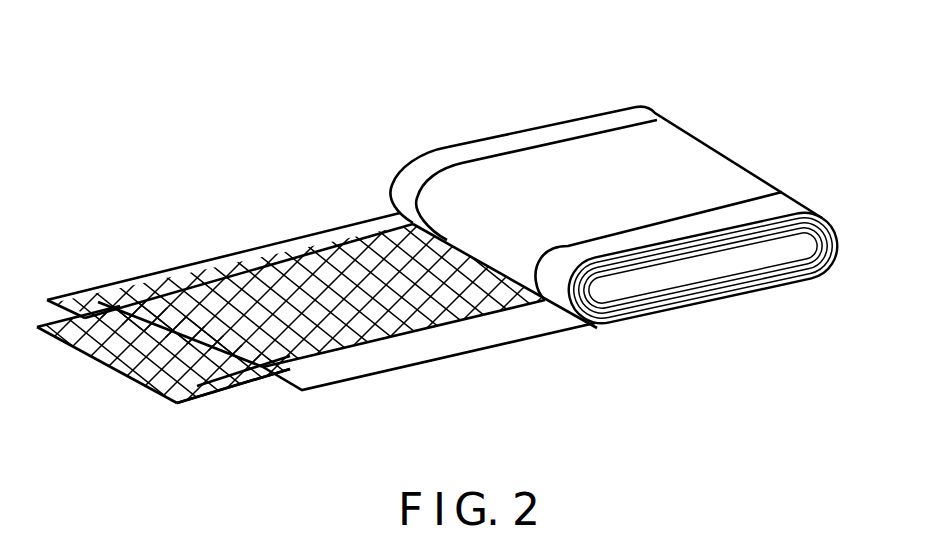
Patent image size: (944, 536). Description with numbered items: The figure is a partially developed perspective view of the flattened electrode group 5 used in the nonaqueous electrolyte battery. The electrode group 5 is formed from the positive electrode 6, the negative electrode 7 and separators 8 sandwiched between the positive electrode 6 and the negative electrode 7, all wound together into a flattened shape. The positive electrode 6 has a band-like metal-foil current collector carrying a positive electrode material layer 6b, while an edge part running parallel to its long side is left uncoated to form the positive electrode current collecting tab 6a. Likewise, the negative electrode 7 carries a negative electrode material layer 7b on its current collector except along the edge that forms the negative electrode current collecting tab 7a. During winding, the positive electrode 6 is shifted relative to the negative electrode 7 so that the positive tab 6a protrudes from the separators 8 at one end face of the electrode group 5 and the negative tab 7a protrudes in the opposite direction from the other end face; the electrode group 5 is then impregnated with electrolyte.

The electrode group 5 is at (498, 106).
The positive electrode 6 is at (152, 268).
The positive electrode current collecting tab 6a is at (580, 125).
The positive electrode material layer 6b is at (108, 322).
The negative electrode 7 is at (503, 348).
The negative electrode current collecting tab 7a is at (778, 202).
The negative electrode material layer 7b is at (383, 335).
The separator 8 is at (257, 381).